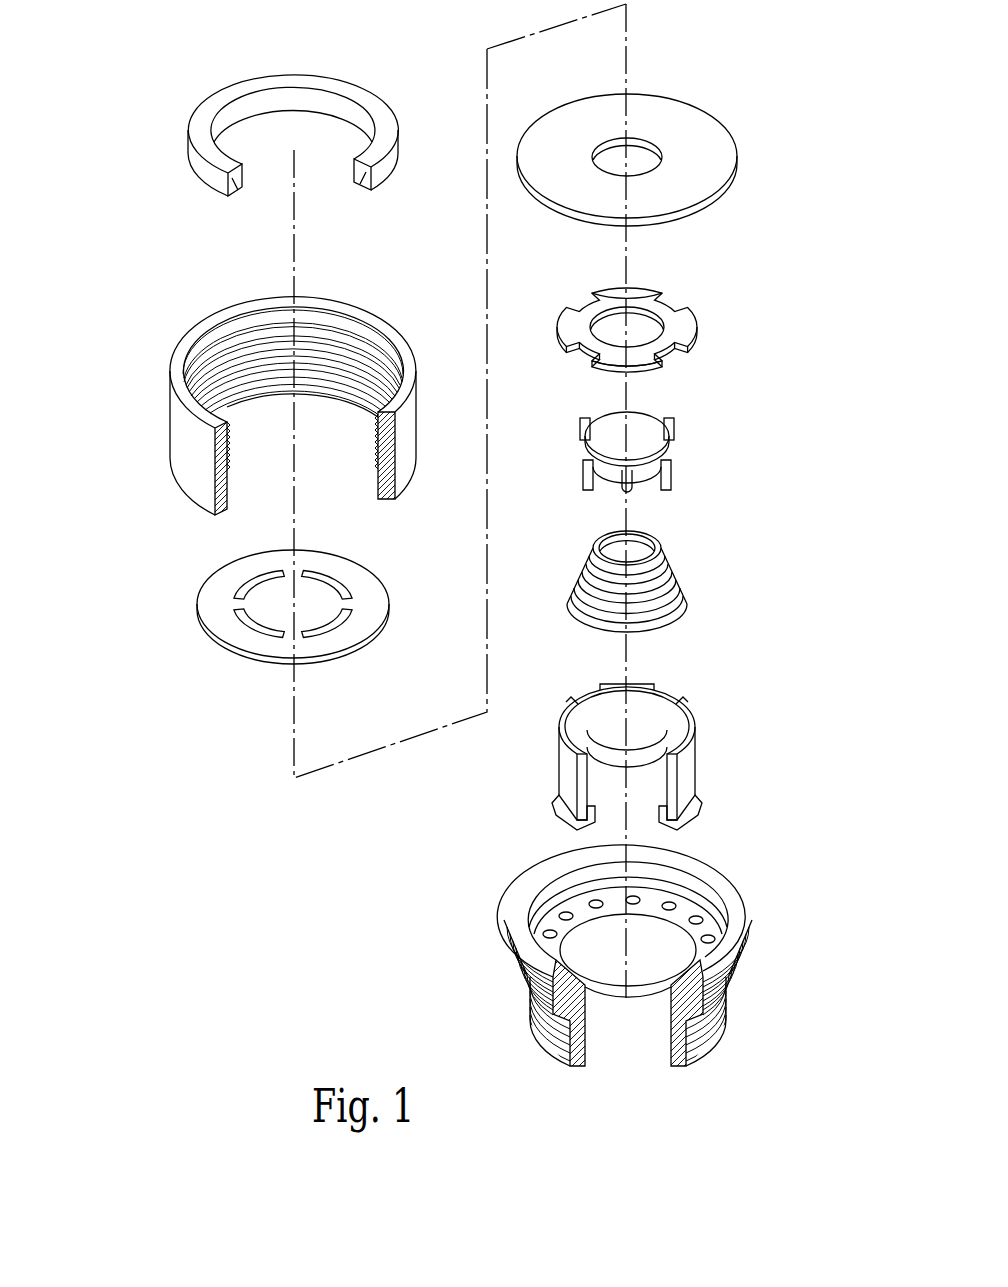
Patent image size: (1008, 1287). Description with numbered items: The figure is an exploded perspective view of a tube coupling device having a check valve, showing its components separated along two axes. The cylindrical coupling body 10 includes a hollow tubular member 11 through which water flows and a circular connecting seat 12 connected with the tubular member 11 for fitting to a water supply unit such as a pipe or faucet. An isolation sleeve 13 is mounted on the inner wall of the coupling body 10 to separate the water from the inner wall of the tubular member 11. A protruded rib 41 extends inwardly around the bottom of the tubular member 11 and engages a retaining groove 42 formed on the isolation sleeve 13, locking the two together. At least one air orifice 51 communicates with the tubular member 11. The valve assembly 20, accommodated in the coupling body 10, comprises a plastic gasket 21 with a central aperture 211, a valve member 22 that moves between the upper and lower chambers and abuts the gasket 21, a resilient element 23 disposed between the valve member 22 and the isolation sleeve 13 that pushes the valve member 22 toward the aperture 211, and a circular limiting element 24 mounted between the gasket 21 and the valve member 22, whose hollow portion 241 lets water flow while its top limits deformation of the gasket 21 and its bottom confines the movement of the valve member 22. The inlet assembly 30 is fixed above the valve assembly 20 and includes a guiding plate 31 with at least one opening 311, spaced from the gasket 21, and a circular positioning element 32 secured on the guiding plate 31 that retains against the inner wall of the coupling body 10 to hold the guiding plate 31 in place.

The coupling body 10 is at (798, 800).
The tubular member 11 is at (722, 1025).
The connecting seat 12 is at (412, 427).
The isolation sleeve 13 is at (688, 767).
The valve assembly 20 is at (798, 16).
The gasket 21 is at (668, 112).
The aperture 211 is at (640, 155).
The valve member 22 is at (648, 448).
The resilient element 23 is at (665, 562).
The limiting element 24 is at (660, 307).
The hollow portion 241 is at (677, 360).
The inlet assembly 30 is at (106, 157).
The guiding plate 31 is at (217, 590).
The opening 311 is at (255, 590).
The positioning element 32 is at (202, 122).
The protruded rib 41 is at (592, 1045).
The retaining groove 42 is at (560, 810).
The air orifice 51 is at (567, 917).